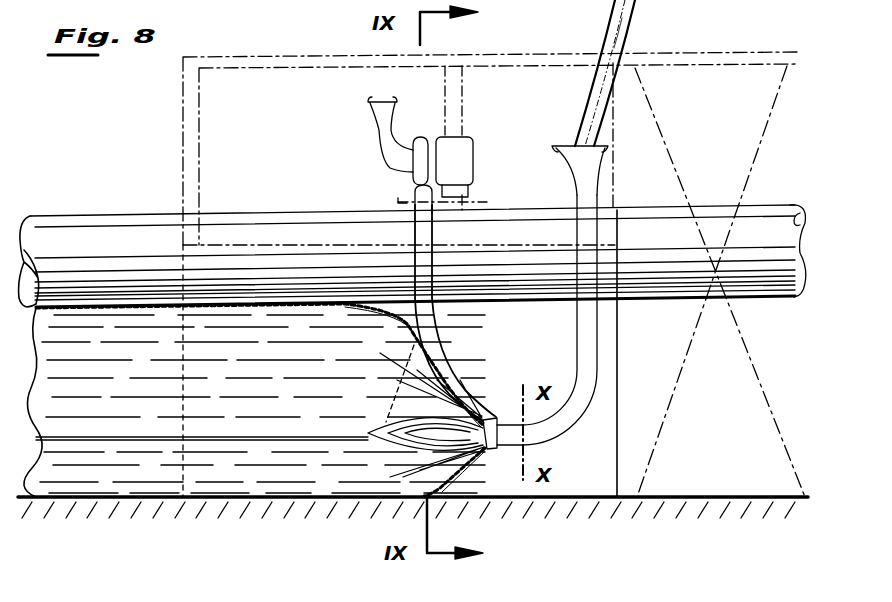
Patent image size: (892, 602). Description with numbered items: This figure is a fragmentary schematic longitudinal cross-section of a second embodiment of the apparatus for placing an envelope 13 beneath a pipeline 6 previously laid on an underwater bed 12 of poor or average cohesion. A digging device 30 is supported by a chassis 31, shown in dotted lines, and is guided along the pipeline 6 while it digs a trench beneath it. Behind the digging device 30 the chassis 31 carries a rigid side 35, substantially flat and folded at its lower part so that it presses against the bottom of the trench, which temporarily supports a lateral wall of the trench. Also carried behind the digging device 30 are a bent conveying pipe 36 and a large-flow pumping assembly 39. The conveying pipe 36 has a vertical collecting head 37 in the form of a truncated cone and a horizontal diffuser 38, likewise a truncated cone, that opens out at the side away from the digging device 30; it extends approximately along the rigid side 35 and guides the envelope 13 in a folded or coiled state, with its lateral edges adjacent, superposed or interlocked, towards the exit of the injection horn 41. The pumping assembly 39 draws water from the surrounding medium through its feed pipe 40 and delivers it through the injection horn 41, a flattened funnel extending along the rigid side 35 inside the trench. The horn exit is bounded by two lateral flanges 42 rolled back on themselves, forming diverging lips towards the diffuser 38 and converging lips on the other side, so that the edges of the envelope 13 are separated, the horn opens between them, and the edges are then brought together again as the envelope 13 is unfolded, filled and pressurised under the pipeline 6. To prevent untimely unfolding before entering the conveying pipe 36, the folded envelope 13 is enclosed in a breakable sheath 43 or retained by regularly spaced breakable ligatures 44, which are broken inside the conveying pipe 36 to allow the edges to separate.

The pipeline 6 is at (763, 230).
The underwater bed 12 is at (413, 521).
The envelope 13 is at (442, 355).
The digging device 30 is at (707, 133).
The chassis 31 is at (301, 56).
The rigid side 35 is at (600, 423).
The conveying pipe 36 is at (577, 346).
The collecting head 37 is at (572, 158).
The diffuser 38 is at (494, 450).
The pumping assembly 39 is at (458, 152).
The feed pipe 40 is at (374, 134).
The injection horn 41 is at (424, 322).
The lateral flanges 42 is at (364, 433).
The breakable sheath 43 is at (604, 82).
The breakable ligatures 44 is at (625, 34).